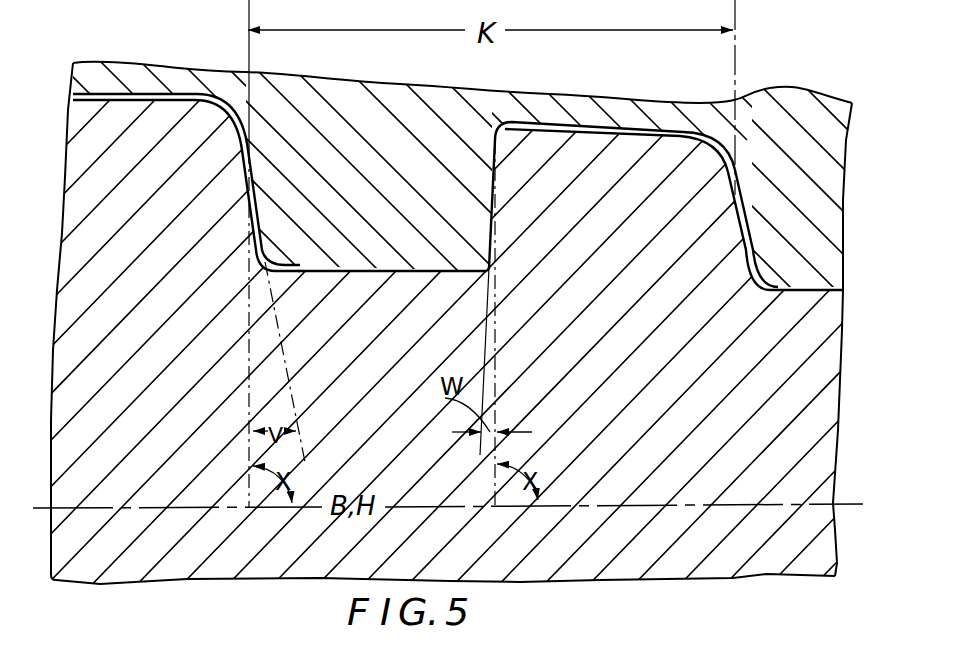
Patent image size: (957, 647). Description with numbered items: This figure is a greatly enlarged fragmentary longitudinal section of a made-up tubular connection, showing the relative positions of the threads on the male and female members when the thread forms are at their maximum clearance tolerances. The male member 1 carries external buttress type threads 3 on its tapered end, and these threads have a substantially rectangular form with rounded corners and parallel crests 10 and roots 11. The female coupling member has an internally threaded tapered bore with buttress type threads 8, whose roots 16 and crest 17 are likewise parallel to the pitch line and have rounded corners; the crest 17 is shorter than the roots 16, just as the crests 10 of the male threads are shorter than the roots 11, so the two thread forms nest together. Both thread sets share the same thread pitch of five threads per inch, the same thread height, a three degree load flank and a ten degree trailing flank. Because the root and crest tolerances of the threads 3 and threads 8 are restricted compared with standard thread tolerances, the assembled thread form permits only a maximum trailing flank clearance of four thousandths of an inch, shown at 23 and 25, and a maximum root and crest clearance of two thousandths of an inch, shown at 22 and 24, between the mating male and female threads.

The male member 1 is at (817, 432).
The buttress type threads 3 is at (75, 182).
The buttress type threads 8 is at (280, 117).
The crests 10 is at (585, 167).
The roots 11 is at (406, 330).
The roots 16 is at (587, 120).
The crest 17 is at (405, 247).
The maximum root and crest clearance 22 is at (162, 93).
The maximum trailing flank clearance 23 is at (253, 232).
The maximum root and crest clearance 24 is at (641, 122).
The maximum trailing flank clearance 25 is at (739, 253).